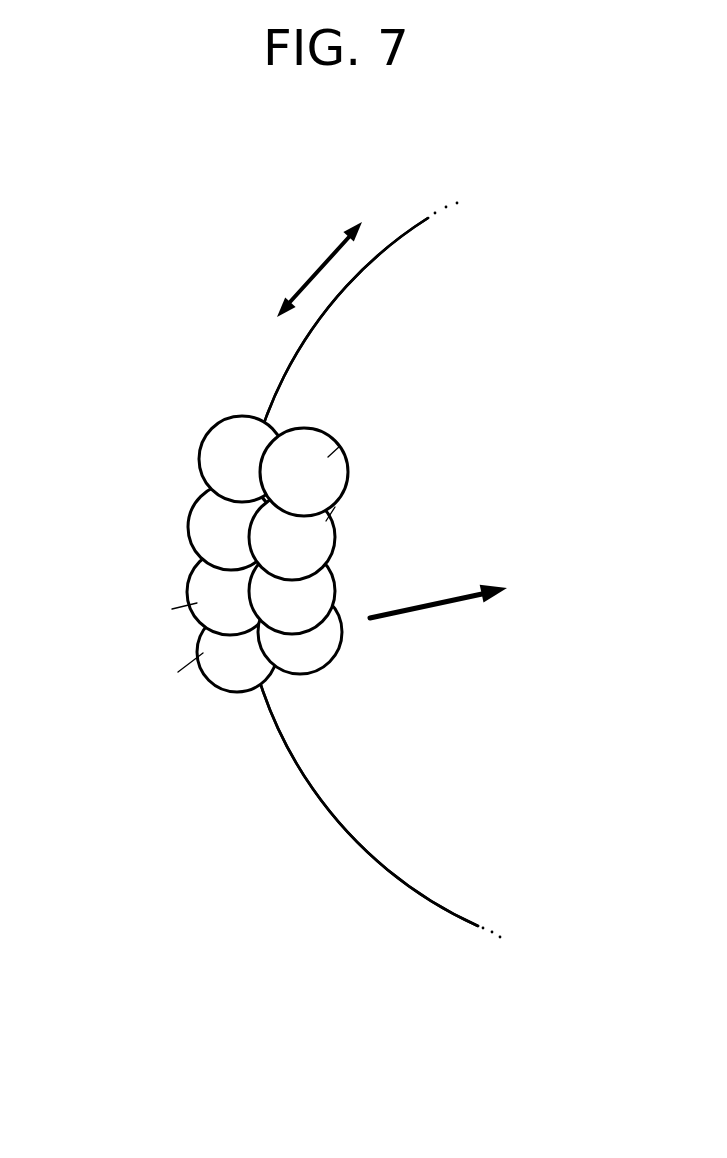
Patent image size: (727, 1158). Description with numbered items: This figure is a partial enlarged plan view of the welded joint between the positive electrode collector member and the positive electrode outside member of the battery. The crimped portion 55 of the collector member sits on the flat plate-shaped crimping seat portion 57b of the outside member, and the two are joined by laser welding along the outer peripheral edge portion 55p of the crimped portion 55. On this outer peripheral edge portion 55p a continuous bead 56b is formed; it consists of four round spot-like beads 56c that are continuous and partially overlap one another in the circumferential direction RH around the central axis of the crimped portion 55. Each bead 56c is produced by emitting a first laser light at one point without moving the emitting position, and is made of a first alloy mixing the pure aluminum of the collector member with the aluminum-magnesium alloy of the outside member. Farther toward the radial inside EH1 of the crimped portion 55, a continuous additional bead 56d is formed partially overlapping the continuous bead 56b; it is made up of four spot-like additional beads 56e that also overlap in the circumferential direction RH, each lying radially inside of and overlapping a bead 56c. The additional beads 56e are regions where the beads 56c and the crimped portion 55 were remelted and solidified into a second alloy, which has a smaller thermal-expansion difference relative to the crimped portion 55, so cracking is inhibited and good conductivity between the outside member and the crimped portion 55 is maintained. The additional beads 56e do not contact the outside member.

The outer peripheral edge portion 55p is at (342, 728).
The crimped portion 55 is at (316, 572).
The continuous bead 56b is at (203, 653).
The spot-like bead 56c is at (197, 603).
The continuous additional bead 56d is at (326, 521).
The spot-like additional bead 56e is at (328, 457).
The crimping seat portion 57b is at (210, 407).
The circumferential direction RH is at (316, 269).
The radial inside EH1 is at (471, 593).